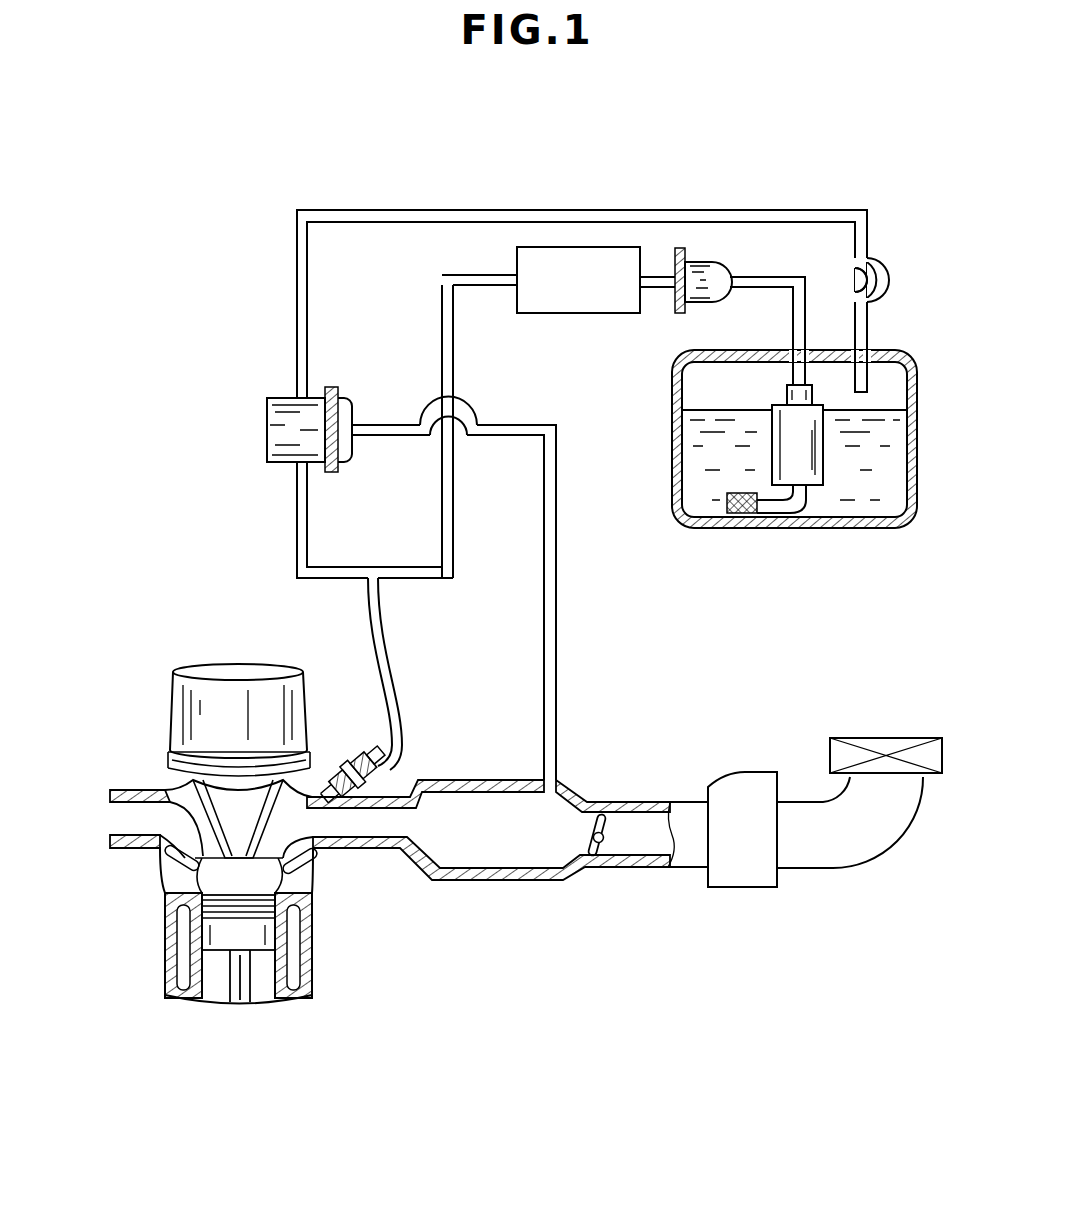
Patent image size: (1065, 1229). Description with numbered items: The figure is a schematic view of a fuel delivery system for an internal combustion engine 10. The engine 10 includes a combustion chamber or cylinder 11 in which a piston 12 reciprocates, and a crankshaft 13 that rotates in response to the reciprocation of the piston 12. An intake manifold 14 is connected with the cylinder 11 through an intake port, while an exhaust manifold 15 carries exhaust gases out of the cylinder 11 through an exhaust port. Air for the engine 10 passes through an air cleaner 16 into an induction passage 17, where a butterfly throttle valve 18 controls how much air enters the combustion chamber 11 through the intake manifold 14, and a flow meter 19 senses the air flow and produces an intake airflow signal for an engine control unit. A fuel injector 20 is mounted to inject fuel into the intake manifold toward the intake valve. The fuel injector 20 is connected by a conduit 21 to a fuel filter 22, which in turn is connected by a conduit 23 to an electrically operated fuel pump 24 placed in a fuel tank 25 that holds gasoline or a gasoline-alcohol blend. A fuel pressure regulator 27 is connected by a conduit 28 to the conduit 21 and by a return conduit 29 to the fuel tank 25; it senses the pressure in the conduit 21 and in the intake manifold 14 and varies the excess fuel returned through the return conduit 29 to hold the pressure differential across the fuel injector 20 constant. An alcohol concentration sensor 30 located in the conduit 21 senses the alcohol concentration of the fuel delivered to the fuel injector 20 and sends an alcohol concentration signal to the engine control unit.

The internal combustion engine 10 is at (318, 712).
The combustion chamber 11 is at (255, 880).
The piston 12 is at (255, 928).
The crankshaft 13 is at (238, 992).
The intake manifold 14 is at (435, 882).
The exhaust manifold 15 is at (128, 793).
The air cleaner 16 is at (906, 738).
The induction passage 17 is at (640, 869).
The butterfly throttle valve 18 is at (592, 869).
The flow meter 19 is at (722, 787).
The fuel injector 20 is at (385, 770).
The conduit 21 is at (442, 345).
The fuel filter 22 is at (712, 268).
The conduit 23 is at (806, 297).
The fuel pump 24 is at (812, 486).
The fuel tank 25 is at (708, 530).
The fuel pressure regulator 27 is at (267, 420).
The conduit 28 is at (302, 510).
The return conduit 29 is at (297, 345).
The alcohol concentration sensor 30 is at (606, 240).